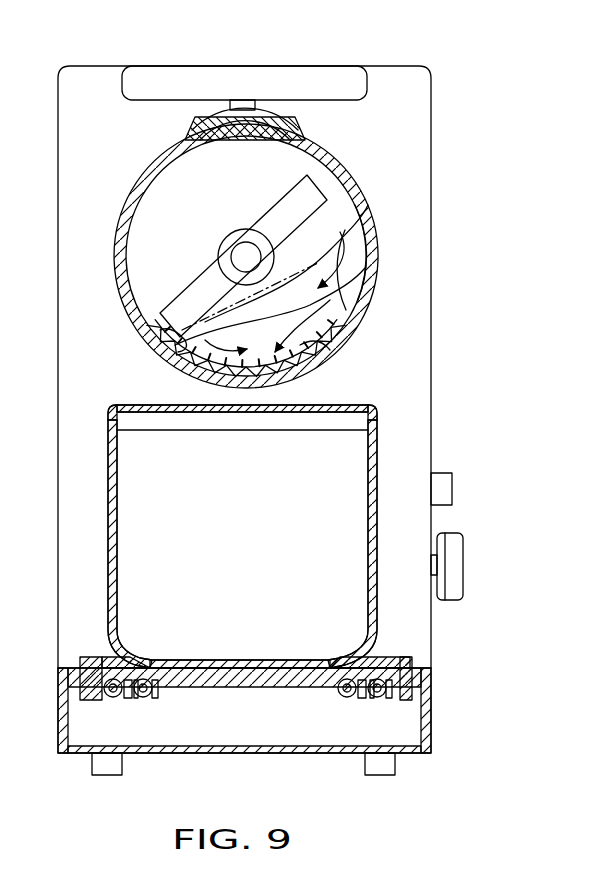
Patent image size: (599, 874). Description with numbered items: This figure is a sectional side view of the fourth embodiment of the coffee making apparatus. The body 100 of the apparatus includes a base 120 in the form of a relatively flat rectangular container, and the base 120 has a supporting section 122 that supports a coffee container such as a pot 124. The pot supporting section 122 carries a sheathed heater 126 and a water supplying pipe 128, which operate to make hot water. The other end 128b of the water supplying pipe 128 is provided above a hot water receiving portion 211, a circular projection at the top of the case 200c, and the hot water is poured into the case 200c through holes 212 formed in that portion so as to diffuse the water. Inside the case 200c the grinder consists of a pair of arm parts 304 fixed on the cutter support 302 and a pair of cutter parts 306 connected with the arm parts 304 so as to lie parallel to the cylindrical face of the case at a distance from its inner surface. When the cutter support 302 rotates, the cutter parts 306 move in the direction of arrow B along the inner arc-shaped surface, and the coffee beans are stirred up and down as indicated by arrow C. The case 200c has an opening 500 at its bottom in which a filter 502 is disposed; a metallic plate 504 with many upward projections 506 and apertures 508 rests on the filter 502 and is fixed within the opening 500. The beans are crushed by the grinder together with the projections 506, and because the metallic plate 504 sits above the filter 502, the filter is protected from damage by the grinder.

The body 100 is at (437, 397).
The base 120 is at (433, 703).
The supporting section 122 is at (283, 672).
The pot 124 is at (108, 480).
The sheathed heater 126 is at (143, 698).
The water supplying pipe 128 is at (113, 698).
The other end of the water supplying pipe 128b is at (254, 106).
The case 200c is at (357, 177).
The hot water receiving portion 211 is at (208, 118).
The holes 212 is at (213, 146).
The cutter support 302 is at (253, 255).
The arm parts 304 is at (270, 200).
The cutter parts 306 is at (328, 187).
The opening 500 is at (323, 360).
The filter 502 is at (190, 368).
The metallic plate 504 is at (350, 310).
The upward projections 506 is at (337, 335).
The apertures 508 is at (180, 352).
The arrow B is at (190, 242).
The arrow C is at (353, 218).